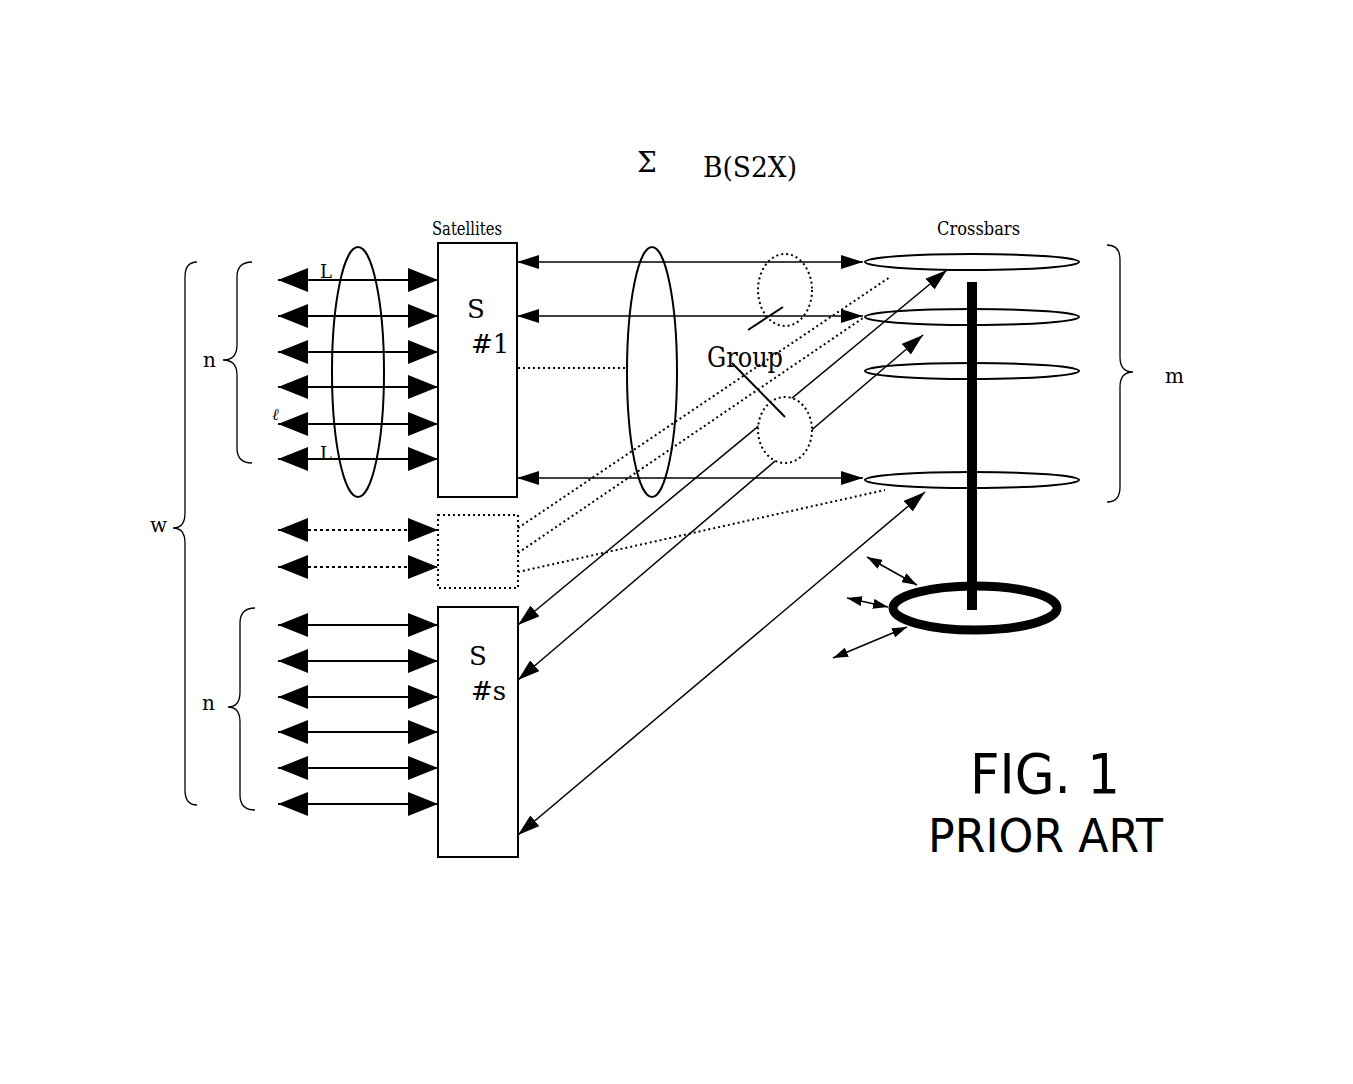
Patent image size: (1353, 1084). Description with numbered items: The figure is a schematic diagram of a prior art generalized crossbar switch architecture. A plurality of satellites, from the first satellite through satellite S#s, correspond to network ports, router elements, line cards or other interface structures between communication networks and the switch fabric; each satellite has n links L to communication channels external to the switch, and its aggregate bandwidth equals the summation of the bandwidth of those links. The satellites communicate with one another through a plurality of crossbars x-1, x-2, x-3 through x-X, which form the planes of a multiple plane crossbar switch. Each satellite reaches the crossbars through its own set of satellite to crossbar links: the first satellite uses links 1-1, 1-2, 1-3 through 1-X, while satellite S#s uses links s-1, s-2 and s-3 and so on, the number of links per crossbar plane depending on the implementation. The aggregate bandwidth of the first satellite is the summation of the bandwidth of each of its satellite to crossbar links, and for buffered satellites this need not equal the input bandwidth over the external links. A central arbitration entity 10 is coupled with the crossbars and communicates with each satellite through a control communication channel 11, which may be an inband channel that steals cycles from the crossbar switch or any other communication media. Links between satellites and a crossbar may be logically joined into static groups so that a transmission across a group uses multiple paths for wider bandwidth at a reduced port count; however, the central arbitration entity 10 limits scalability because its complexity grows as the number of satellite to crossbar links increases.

The satellite to crossbar S2X link 1-1 is at (605, 260).
The satellite to crossbar S2X link 1-2 is at (550, 313).
The satellite to crossbar S2X link 1-3 is at (538, 368).
The satellite to crossbar S2X link 1-X is at (537, 477).
The satellite to crossbar S2X link s-1 is at (612, 548).
The satellite to crossbar S2X link s-2 is at (582, 626).
The satellite to crossbar S2X link s-3 is at (583, 780).
The crossbar x-1 is at (1053, 265).
The crossbar x-2 is at (1067, 323).
The crossbar x-3 is at (1073, 372).
The crossbar x-X is at (1073, 478).
The central arbitration entity 10 is at (1002, 630).
The control communication channel 11 is at (830, 688).